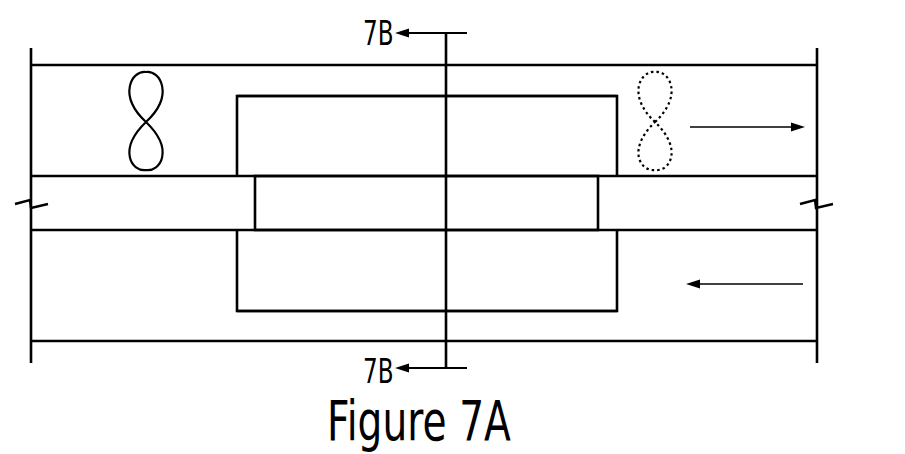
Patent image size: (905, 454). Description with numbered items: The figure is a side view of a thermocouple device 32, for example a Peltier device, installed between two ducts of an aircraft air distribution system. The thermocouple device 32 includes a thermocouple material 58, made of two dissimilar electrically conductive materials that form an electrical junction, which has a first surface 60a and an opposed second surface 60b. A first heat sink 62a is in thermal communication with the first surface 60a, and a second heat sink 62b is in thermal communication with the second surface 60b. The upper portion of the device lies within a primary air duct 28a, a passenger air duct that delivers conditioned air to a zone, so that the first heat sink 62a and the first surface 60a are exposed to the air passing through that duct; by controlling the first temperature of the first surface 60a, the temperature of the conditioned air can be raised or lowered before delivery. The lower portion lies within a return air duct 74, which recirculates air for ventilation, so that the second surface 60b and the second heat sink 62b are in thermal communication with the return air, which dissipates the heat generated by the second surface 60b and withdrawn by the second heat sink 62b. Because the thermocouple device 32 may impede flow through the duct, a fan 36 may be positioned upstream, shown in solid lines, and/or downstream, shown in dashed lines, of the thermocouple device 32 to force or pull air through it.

The primary air duct 28a is at (700, 88).
The return air duct 74 is at (700, 320).
The thermocouple device 32 is at (635, 203).
The thermocouple material 58 is at (367, 219).
The first surface 60a is at (296, 176).
The second surface 60b is at (297, 230).
The first heat sink 62a is at (496, 86).
The second heat sink 62b is at (495, 322).
The fan 36 is at (133, 86).